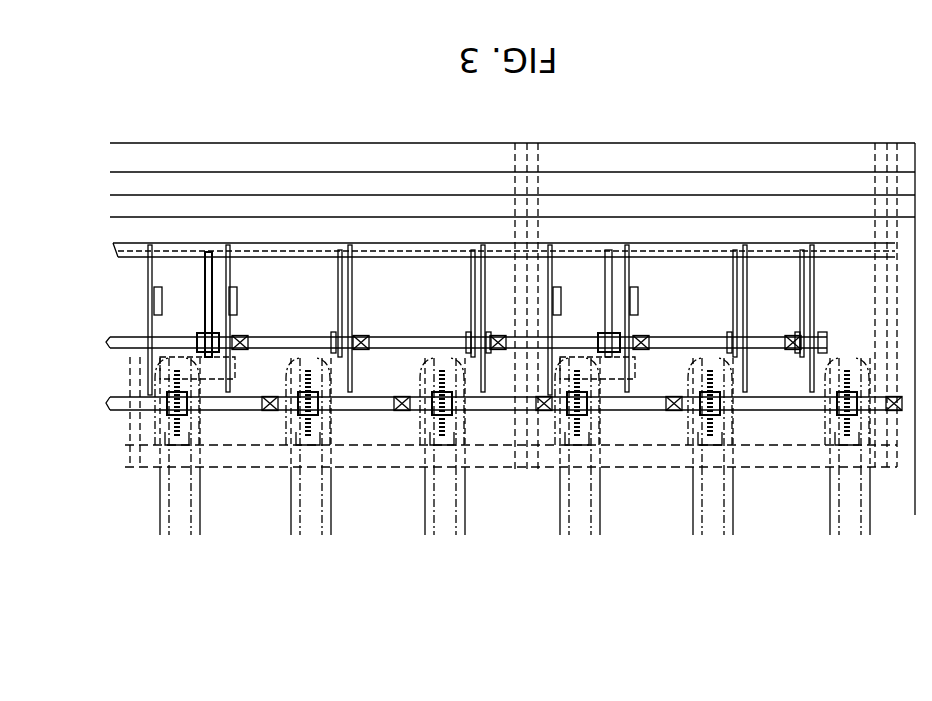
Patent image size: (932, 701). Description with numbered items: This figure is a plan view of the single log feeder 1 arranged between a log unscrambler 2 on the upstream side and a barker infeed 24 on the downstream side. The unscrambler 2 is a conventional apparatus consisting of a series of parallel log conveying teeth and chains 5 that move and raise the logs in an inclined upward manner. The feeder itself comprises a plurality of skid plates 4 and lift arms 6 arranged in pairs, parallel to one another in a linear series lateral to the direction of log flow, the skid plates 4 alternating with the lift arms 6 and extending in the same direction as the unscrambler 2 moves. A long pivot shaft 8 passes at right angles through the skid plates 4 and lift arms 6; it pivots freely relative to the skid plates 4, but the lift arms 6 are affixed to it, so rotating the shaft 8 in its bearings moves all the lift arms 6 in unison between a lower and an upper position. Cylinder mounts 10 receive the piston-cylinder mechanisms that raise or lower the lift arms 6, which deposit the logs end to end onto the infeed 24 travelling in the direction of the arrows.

The single log feeder 1 is at (228, 222).
The log unscrambler 2 is at (381, 474).
The skid plate 4 is at (353, 299).
The log conveying teeth and chains 5 is at (453, 440).
The lift arm 6 is at (337, 300).
The pivot shaft 8 is at (433, 335).
The cylinder mount 10 is at (162, 302).
The barker infeed 24 is at (652, 205).